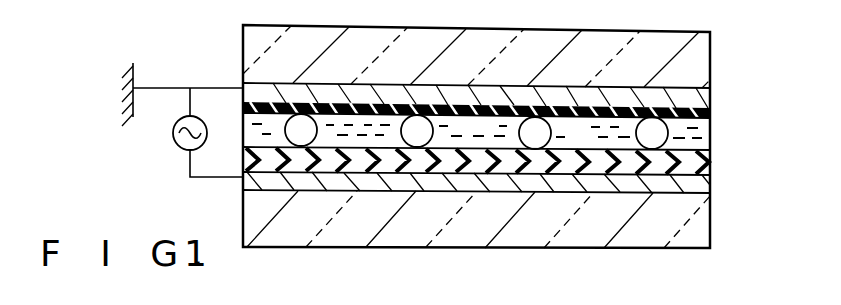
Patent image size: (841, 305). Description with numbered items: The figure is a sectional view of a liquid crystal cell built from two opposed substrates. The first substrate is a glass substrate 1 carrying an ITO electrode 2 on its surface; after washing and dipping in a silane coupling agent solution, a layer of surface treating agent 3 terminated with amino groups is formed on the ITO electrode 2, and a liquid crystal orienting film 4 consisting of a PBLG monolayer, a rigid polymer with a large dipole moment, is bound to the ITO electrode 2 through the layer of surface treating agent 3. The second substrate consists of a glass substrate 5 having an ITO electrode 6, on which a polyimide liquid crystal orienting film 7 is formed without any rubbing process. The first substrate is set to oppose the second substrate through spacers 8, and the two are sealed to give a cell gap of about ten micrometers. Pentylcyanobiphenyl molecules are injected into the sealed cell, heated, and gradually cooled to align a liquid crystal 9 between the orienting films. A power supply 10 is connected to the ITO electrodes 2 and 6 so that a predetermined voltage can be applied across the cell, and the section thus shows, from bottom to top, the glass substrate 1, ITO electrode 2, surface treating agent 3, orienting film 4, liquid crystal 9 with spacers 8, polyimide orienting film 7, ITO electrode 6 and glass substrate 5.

The glass substrate 1 is at (700, 227).
The ITO electrode 2 is at (703, 196).
The layer of surface treating agent 3 is at (710, 171).
The liquid crystal orienting film 4 is at (707, 153).
The glass substrate 5 is at (712, 52).
The ITO electrode 6 is at (703, 97).
The polyimide liquid crystal orienting film 7 is at (712, 113).
The spacers 8 is at (302, 133).
The liquid crystal 9 is at (483, 132).
The power supply 10 is at (186, 151).